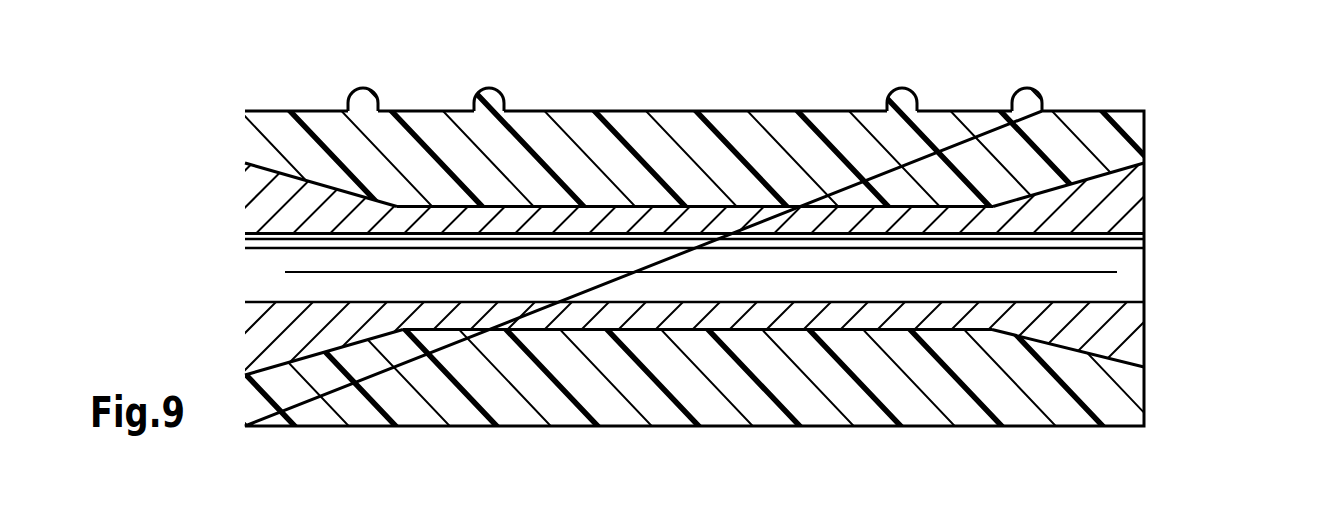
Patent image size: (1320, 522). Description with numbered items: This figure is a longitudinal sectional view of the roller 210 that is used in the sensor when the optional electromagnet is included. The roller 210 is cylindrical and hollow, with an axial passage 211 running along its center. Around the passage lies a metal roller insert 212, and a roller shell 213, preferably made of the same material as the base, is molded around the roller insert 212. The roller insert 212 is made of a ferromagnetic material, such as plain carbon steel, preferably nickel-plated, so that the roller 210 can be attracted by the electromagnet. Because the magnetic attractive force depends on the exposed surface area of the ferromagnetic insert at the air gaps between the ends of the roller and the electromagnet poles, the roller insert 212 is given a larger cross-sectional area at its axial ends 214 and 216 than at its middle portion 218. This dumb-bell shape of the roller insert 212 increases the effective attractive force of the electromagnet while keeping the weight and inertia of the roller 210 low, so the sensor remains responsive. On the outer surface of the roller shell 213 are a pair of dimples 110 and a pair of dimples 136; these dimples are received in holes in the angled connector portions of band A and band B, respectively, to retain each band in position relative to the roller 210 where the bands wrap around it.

The dimples 110 is at (486, 97).
The dimples 136 is at (1033, 95).
The roller 210 is at (1180, 135).
The axial passage 211 is at (1133, 267).
The roller insert 212 is at (1158, 322).
The roller shell 213 is at (1117, 402).
The axial end 214 is at (1145, 195).
The axial end 216 is at (245, 203).
The middle portion 218 is at (657, 220).